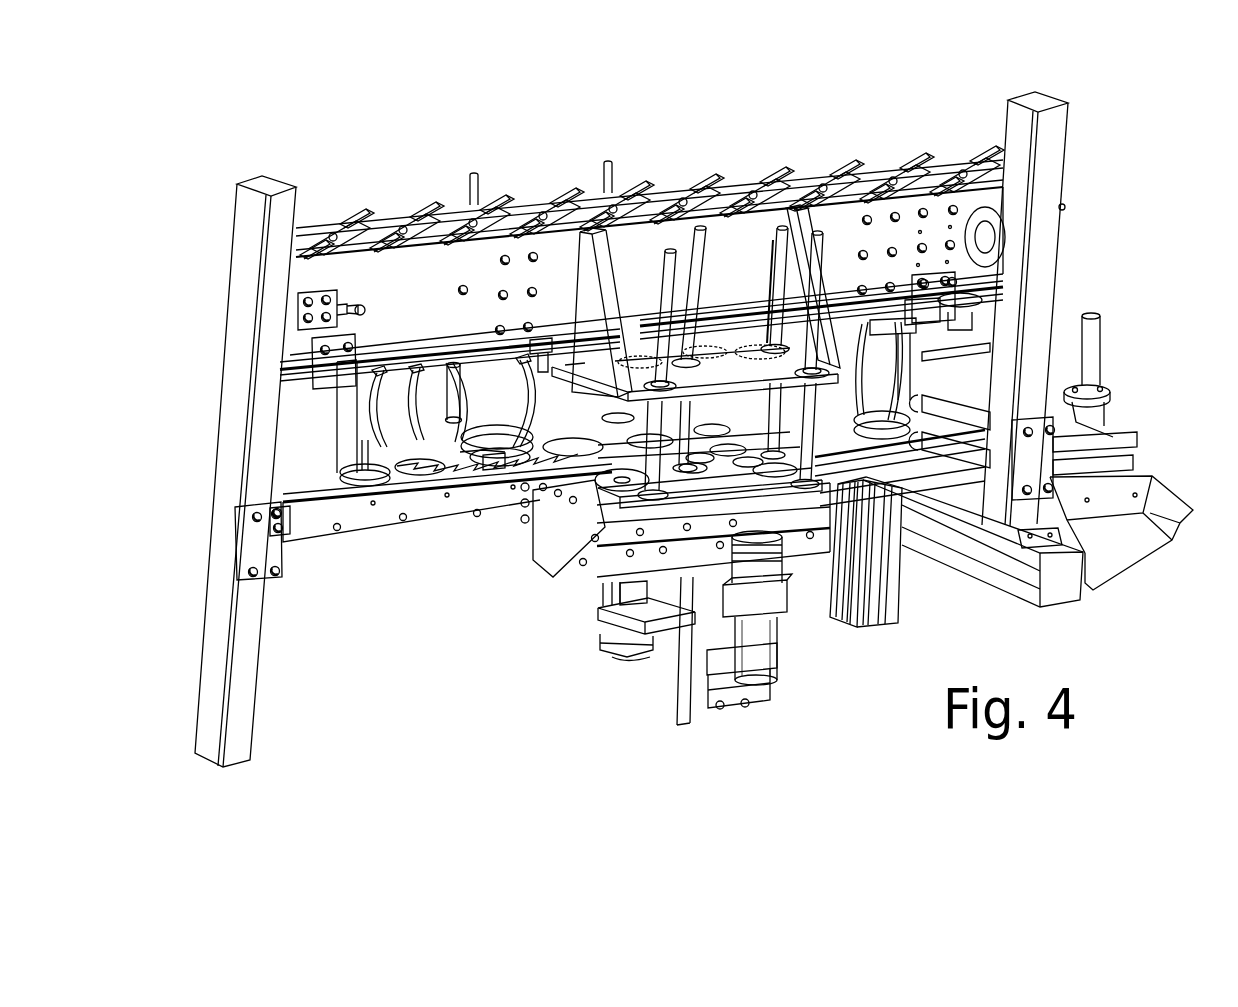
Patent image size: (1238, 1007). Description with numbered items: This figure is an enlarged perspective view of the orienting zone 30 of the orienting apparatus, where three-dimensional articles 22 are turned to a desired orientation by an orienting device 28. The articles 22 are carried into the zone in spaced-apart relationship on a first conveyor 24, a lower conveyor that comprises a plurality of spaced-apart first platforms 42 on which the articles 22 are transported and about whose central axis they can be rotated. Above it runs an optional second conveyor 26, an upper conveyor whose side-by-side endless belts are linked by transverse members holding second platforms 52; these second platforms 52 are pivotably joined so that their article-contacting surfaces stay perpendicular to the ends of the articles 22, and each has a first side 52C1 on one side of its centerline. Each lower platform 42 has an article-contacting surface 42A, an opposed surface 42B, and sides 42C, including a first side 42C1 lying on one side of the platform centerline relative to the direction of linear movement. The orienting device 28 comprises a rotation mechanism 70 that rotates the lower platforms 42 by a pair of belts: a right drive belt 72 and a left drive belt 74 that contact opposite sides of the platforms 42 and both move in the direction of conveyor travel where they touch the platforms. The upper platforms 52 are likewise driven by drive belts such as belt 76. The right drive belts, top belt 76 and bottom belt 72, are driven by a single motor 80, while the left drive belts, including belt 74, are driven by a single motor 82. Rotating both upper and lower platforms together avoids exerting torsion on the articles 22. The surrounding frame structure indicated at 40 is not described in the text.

The three-dimensional articles 22 is at (363, 437).
The first conveyor 24 is at (286, 497).
The second conveyor 26 is at (302, 279).
The orienting device 28 is at (676, 240).
The orienting zone 30 is at (808, 143).
The right support assembly 40 is at (1108, 292).
The first platforms 42 is at (372, 547).
The article-contacting surface 42A is at (394, 496).
The opposed surface 42B is at (363, 493).
The sides 42C is at (376, 490).
The first side 42C1 is at (531, 530).
The second platforms 52 is at (393, 367).
The first side 52C1 is at (543, 360).
The rotation mechanism 70 is at (812, 480).
The belt 72 is at (585, 560).
The belt 74 is at (466, 458).
The drive belt 76 is at (727, 357).
The motor 80 is at (737, 643).
The motor 82 is at (608, 632).